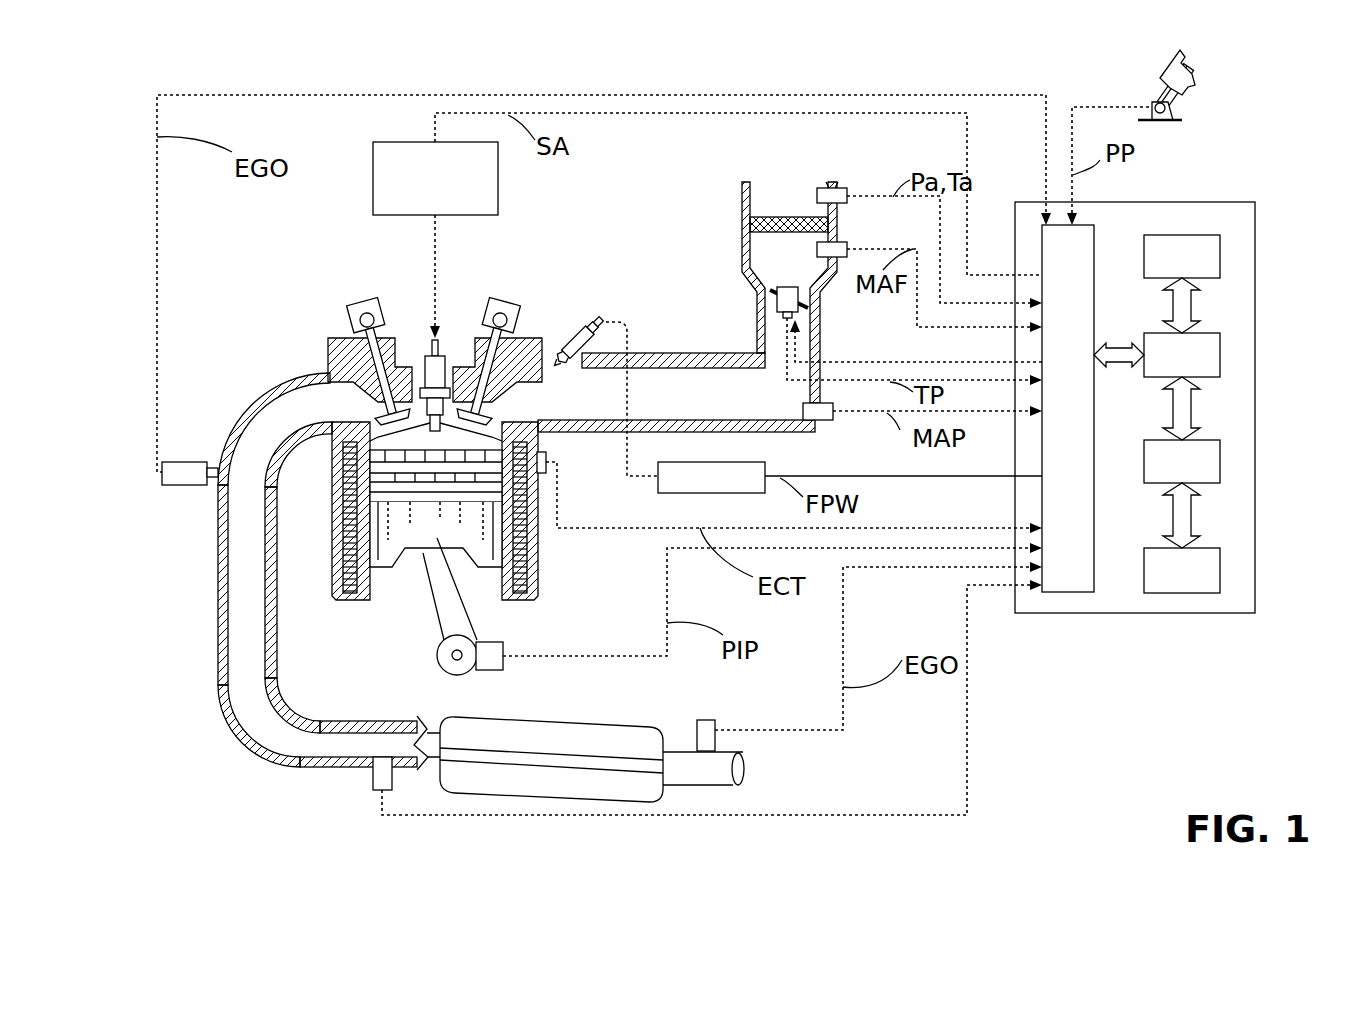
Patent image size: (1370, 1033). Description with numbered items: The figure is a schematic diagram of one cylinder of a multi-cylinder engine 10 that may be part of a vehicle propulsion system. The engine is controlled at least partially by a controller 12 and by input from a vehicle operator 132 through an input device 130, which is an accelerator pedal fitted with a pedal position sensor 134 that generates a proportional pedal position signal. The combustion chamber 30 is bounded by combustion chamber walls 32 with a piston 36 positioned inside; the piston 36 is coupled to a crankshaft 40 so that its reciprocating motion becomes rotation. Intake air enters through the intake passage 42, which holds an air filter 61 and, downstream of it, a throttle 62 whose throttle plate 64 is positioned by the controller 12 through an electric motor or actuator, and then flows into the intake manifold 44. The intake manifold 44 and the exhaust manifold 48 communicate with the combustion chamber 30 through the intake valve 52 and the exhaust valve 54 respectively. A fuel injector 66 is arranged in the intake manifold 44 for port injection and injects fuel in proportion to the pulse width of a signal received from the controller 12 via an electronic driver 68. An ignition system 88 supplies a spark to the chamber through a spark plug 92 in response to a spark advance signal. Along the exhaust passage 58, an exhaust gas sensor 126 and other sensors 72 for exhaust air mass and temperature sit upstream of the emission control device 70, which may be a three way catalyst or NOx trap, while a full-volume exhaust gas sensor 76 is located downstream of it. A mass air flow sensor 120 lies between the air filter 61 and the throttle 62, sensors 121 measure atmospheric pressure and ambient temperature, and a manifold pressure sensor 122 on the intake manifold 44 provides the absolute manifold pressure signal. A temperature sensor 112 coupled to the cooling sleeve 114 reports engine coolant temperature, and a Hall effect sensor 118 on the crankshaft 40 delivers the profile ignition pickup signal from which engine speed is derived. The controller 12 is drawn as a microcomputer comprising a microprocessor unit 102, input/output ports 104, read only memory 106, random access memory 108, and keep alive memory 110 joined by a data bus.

The multi-cylinder engine 10 is at (255, 284).
The controller 12 is at (1248, 202).
The combustion chamber 30 is at (433, 440).
The combustion chamber walls 32 is at (373, 584).
The piston 36 is at (437, 548).
The crankshaft 40 is at (445, 672).
The intake passage 42 is at (803, 269).
The intake manifold 44 is at (735, 409).
The exhaust manifold 48 is at (312, 418).
The intake valve 52 is at (476, 413).
The exhaust valve 54 is at (380, 397).
The exhaust passage 58 is at (263, 753).
The air filter 61 is at (766, 222).
The throttle 62 is at (807, 294).
The throttle plate 64 is at (770, 289).
The fuel injector 66 is at (575, 334).
The electronic driver 68 is at (688, 494).
The emission control device 70 is at (623, 728).
The sensors 72 is at (371, 777).
The full-volume exhaust gas sensor 76 is at (707, 720).
The ignition system 88 is at (390, 142).
The spark plug 92 is at (437, 352).
The microprocessor unit 102 is at (1223, 347).
The input/output ports 104 is at (1095, 235).
The read only memory 106 is at (1222, 257).
The random access memory 108 is at (1223, 457).
The keep alive memory 110 is at (1223, 568).
The temperature sensor 112 is at (553, 470).
The cooling sleeve 114 is at (540, 553).
The Hall effect sensor 118 is at (492, 670).
The MAF sensor 120 is at (837, 243).
The sensors 121 is at (840, 195).
The MAP sensor 122 is at (826, 421).
The exhaust gas sensor 126 is at (160, 466).
The input device 130 is at (1140, 83).
The vehicle operator 132 is at (1195, 65).
The pedal position sensor 134 is at (1173, 108).